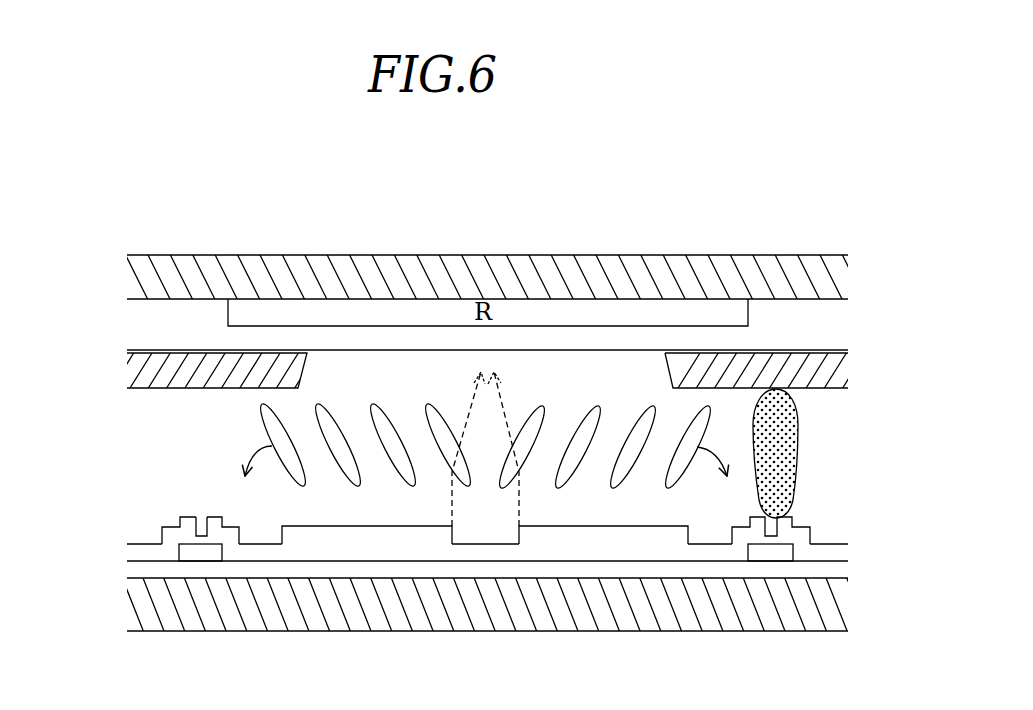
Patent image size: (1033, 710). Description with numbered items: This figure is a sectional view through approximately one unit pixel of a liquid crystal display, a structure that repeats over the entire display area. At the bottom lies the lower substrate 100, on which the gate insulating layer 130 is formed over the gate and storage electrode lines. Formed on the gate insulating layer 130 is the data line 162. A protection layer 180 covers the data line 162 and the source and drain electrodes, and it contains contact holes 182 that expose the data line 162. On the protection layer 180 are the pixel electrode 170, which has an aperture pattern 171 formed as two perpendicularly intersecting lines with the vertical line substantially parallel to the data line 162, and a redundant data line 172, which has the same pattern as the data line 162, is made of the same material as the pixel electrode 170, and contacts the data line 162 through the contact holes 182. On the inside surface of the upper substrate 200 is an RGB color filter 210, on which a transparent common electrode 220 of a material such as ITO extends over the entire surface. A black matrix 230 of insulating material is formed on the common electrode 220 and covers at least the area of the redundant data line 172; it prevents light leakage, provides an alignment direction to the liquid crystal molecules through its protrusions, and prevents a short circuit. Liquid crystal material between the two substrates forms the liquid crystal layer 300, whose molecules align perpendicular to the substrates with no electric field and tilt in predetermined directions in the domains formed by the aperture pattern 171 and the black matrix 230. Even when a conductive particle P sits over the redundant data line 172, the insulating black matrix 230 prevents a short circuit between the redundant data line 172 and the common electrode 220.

The lower substrate 100 is at (137, 605).
The gate insulating layer 130 is at (137, 570).
The data line 162 is at (197, 556).
The pixel electrode 170 is at (333, 535).
The aperture pattern 171 is at (491, 516).
The redundant data line 172 is at (180, 518).
The protection layer 180 is at (137, 554).
The contact holes 182 is at (200, 510).
The upper substrate 200 is at (135, 271).
The RGB color filter 210 is at (227, 312).
The common electrode 220 is at (135, 344).
The black matrix 230 is at (135, 377).
The liquid crystal layer 300 is at (729, 458).
The conductive particle P is at (802, 423).